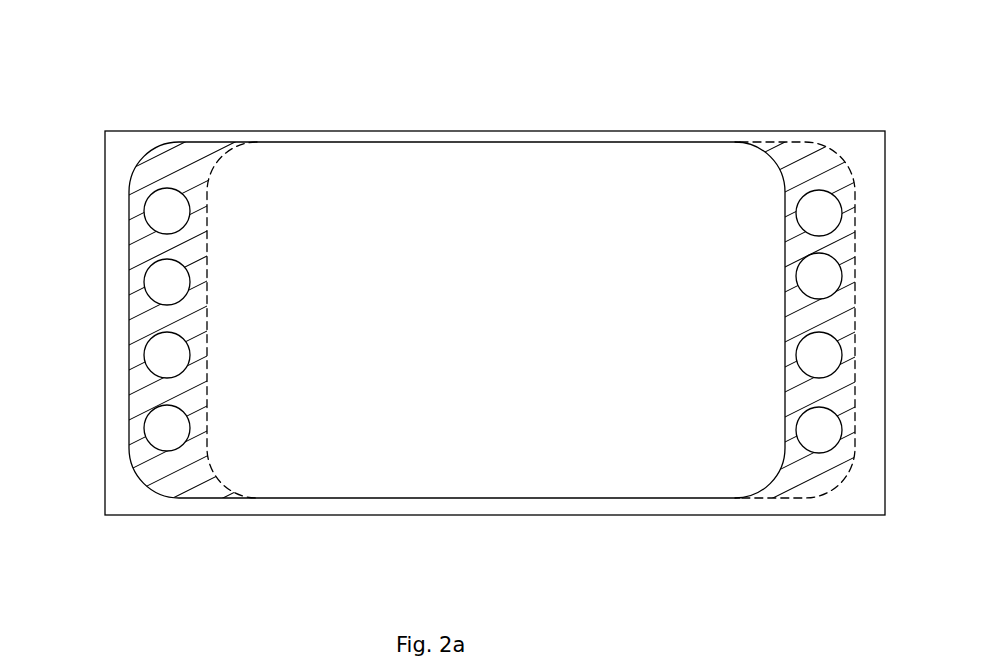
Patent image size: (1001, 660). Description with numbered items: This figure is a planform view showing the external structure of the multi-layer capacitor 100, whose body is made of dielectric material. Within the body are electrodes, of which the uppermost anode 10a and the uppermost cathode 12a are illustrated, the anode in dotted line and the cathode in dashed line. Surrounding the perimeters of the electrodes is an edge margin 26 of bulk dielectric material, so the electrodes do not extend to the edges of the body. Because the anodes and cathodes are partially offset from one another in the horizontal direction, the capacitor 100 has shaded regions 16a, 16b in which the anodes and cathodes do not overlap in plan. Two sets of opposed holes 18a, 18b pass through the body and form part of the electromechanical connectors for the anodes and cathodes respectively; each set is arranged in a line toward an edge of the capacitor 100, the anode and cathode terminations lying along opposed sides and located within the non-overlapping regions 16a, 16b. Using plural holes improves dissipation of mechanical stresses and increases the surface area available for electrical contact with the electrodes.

The capacitor 100 is at (414, 127).
The uppermost anode 10a is at (163, 143).
The uppermost cathode 12a is at (822, 148).
The non-overlapping region 16a is at (141, 253).
The non-overlapping region 16b is at (843, 322).
The holes 18a is at (181, 220).
The holes 18b is at (833, 222).
The edge margin 26 is at (130, 493).